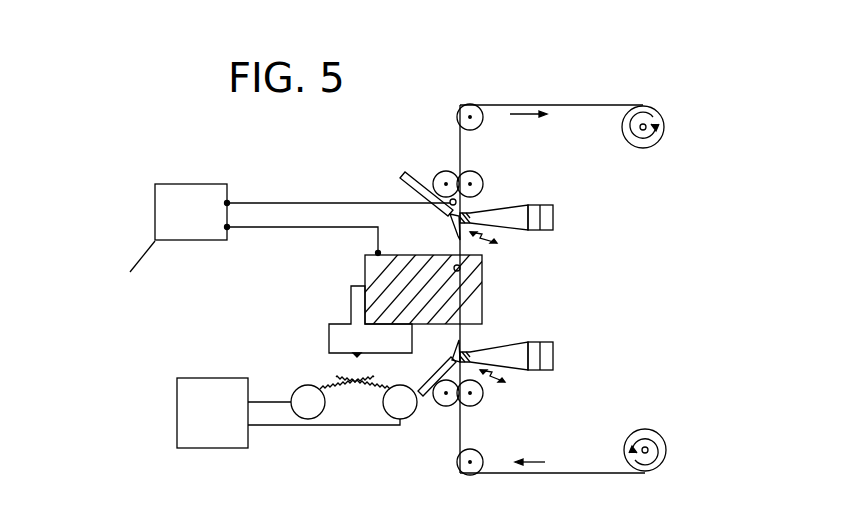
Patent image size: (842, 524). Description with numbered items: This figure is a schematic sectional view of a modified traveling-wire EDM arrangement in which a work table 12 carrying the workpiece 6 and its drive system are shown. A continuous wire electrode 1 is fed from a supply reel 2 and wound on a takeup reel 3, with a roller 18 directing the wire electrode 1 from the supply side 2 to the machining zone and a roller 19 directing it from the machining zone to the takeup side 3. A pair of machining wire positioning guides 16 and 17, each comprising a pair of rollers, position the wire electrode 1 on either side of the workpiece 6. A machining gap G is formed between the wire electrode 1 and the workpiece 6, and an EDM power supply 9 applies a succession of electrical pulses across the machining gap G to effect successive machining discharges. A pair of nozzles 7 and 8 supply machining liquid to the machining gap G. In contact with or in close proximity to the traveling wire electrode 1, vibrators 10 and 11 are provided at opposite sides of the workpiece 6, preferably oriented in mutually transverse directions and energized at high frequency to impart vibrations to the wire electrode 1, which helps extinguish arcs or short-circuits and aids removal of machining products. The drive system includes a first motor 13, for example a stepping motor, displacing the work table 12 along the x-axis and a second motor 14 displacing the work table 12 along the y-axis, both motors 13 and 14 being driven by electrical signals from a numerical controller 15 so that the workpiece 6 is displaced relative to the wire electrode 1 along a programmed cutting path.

The wire electrode 1 is at (582, 105).
The supply reel 2 is at (667, 450).
The takeup reel 3 is at (665, 125).
The workpiece 6 is at (483, 297).
The nozzle 7 is at (422, 400).
The nozzle 8 is at (400, 176).
The EDM power supply 9 is at (207, 241).
The vibrator 10 is at (555, 217).
The vibrator 11 is at (556, 355).
The work table 12 is at (329, 335).
The first motor 13 is at (308, 419).
The second motor 14 is at (392, 417).
The numerical controller 15 is at (200, 448).
The machining wire positioning guide 16 is at (444, 406).
The machining wire positioning guide 17 is at (443, 172).
The roller 18 is at (462, 473).
The roller 19 is at (468, 104).
The machining gap G is at (460, 267).